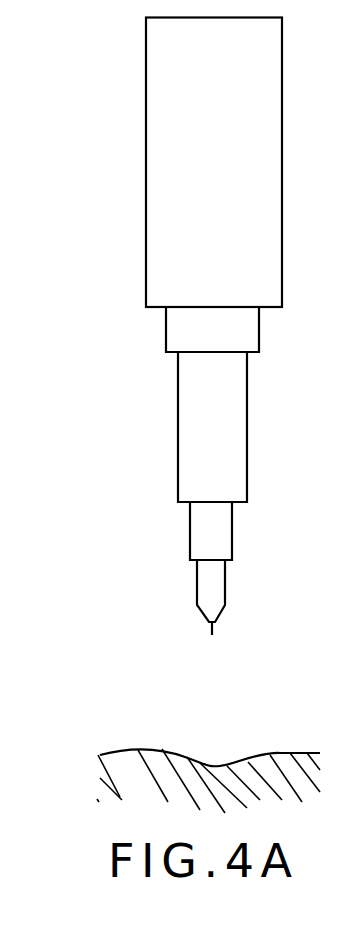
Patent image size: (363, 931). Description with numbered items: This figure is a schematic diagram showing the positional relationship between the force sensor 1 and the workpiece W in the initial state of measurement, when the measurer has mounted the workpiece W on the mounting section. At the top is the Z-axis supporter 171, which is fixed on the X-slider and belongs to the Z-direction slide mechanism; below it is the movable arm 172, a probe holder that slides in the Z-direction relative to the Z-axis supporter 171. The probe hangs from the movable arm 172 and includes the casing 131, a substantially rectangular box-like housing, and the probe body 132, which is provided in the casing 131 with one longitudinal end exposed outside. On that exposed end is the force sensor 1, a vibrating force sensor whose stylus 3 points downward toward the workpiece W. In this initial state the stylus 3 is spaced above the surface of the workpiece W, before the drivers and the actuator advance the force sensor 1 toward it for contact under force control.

The Z-axis supporter 171 is at (146, 97).
The movable arm 172 is at (166, 332).
The casing 131 is at (178, 430).
The probe body 132 is at (190, 532).
The force sensor 1 is at (190, 597).
The stylus 3 is at (212, 634).
The workpiece W is at (128, 750).